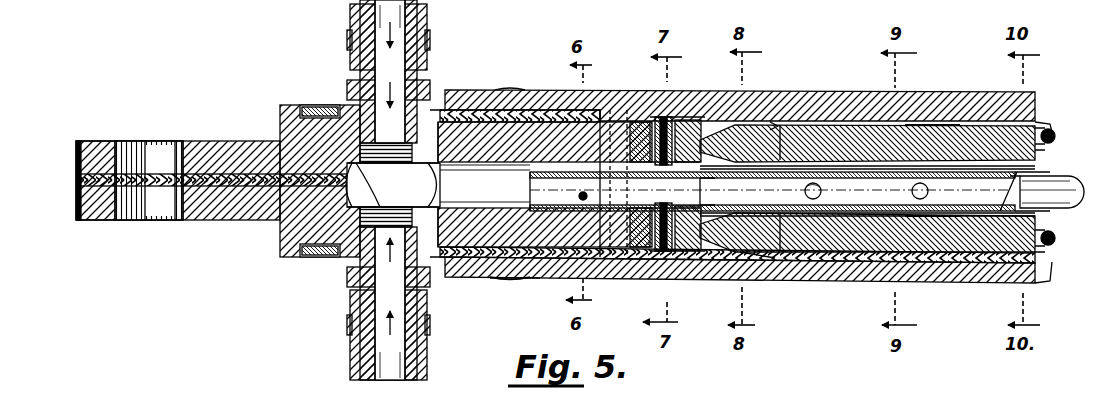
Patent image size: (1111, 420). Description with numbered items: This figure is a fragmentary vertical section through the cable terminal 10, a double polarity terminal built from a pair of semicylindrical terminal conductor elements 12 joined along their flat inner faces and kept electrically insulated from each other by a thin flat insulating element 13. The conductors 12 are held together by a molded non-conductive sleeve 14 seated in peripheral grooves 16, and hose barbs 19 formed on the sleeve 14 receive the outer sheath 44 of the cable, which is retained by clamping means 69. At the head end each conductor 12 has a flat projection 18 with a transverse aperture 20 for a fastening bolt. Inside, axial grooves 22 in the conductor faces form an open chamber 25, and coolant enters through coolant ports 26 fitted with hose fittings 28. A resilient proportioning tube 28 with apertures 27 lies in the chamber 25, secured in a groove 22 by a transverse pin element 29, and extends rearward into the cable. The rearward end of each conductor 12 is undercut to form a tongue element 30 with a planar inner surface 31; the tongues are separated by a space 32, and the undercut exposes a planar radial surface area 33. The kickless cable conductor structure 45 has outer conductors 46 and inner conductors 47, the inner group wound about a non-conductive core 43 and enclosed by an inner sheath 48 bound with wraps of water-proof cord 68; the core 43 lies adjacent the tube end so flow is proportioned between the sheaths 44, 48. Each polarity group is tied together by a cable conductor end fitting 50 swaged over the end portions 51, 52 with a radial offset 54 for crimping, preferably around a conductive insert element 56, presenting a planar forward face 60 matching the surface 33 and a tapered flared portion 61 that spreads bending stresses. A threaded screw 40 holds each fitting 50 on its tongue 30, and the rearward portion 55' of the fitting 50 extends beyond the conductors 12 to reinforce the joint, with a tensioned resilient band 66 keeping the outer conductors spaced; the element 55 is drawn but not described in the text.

The cable terminal 10 is at (288, 93).
The terminal conductor elements 12 is at (460, 97).
The insulating element 13 is at (76, 176).
The molded sleeve 14 is at (330, 107).
The peripheral grooves 16 is at (318, 107).
The flat projections 18 is at (90, 142).
The hose barbs 19 is at (524, 91).
The aperture 20 is at (118, 148).
The axial grooves 22 is at (440, 168).
The chamber 25 is at (544, 184).
The coolant ports 26 is at (353, 172).
The apertures 27 is at (805, 191).
The proportioning tube 28 is at (352, 58).
The transverse pin element 29 is at (592, 204).
The tongue element 30 is at (712, 186).
The inner surface 31 is at (640, 184).
The space 32 is at (562, 189).
The radial surface area 33 is at (622, 110).
The threaded screw 40 is at (666, 187).
The core 43 is at (1078, 181).
The outer sheath 44 is at (870, 124).
The kickless cable conductor structure 45 is at (1050, 120).
The outer conductors 46 is at (1056, 136).
The inner conductors 47 is at (1056, 237).
The inner sheath 48 is at (1050, 172).
The cable conductor end fitting 50 is at (660, 117).
The end portions 51 is at (726, 142).
The end portions 52 is at (722, 262).
The radial offset 54 is at (745, 120).
The insert 55 is at (704, 156).
The rearward portion 55' is at (789, 90).
The conductive insert element 56 is at (614, 130).
The planar forward face 60 is at (600, 150).
The tapered flared portion 61 is at (784, 125).
The resilient band 66 is at (910, 124).
The water-proof cord 68 is at (770, 262).
The clamping means 69 is at (500, 280).